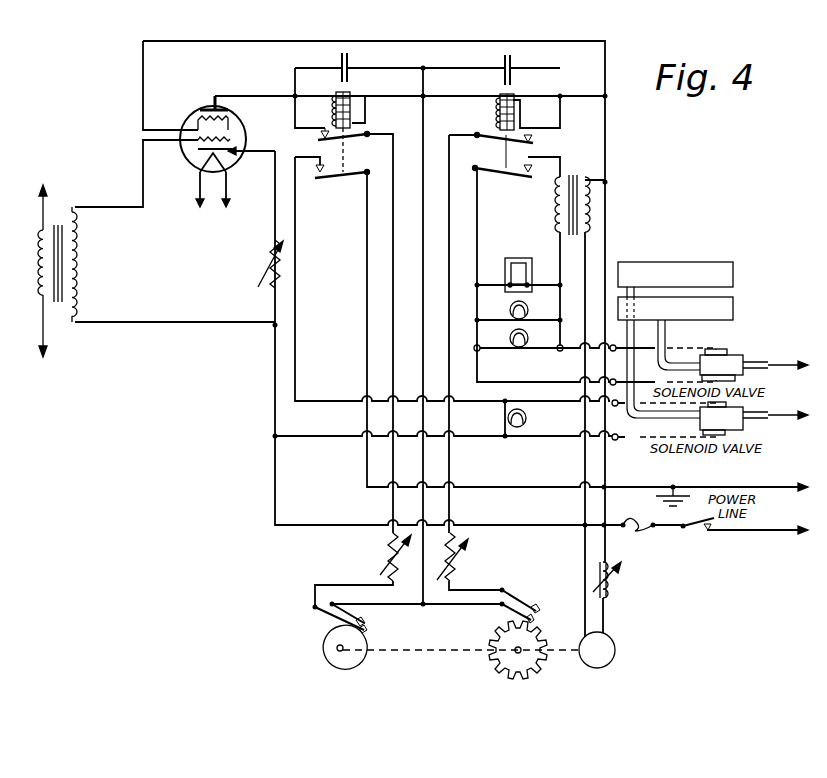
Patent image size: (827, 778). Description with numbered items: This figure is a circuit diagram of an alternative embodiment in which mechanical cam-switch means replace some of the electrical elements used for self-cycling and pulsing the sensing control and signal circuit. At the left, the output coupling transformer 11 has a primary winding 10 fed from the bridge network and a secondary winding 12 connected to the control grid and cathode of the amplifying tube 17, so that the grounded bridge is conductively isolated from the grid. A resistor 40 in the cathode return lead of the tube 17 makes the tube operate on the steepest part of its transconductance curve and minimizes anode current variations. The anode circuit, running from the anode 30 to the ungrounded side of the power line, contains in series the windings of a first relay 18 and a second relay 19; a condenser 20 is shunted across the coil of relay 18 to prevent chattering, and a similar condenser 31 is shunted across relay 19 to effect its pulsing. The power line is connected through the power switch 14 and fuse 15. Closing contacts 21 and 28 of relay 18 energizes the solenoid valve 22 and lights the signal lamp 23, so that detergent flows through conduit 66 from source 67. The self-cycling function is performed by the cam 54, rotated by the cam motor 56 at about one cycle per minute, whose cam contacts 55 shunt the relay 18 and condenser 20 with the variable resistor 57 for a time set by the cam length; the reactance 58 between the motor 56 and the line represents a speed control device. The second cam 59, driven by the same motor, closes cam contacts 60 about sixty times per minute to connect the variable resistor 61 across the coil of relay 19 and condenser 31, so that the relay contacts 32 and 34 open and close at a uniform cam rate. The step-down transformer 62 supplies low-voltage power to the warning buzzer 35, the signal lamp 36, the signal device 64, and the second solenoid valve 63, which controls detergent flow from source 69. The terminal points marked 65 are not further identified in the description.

The primary winding 10 is at (36, 259).
The output coupling transformer 11 is at (60, 206).
The secondary winding 12 is at (84, 270).
The power switch 14 is at (697, 530).
The fuse 15 is at (641, 530).
The amplifying tube 17 is at (226, 144).
The relay 18 is at (333, 92).
The relay 19 is at (494, 113).
The condenser 20 is at (340, 60).
The contacts 21 is at (312, 138).
The solenoid valve 22 is at (748, 426).
The signal lamp 23 is at (527, 419).
The contacts 28 is at (306, 178).
The anode 30 is at (230, 110).
The condenser 31 is at (515, 64).
The contacts 32 is at (531, 165).
The contacts 34 is at (532, 172).
The warning buzzer 35 is at (519, 258).
The signal lamp 36 is at (507, 308).
The resistor 40 is at (263, 262).
The cam 54 is at (363, 661).
The cam contacts 55 is at (372, 630).
The cam motor 56 is at (616, 654).
The variable resistor 57 is at (386, 553).
The reactance 58 is at (618, 592).
The second cam 59 is at (540, 672).
The cam contacts 60 is at (542, 609).
The variable resistor 61 is at (463, 556).
The step-down transformer 62 is at (569, 182).
The solenoid valve 63 is at (738, 358).
The signal device 64 is at (507, 336).
The terminal 65 is at (475, 346).
The conduit 66 is at (628, 424).
The source 67 is at (736, 274).
The source 69 is at (736, 309).